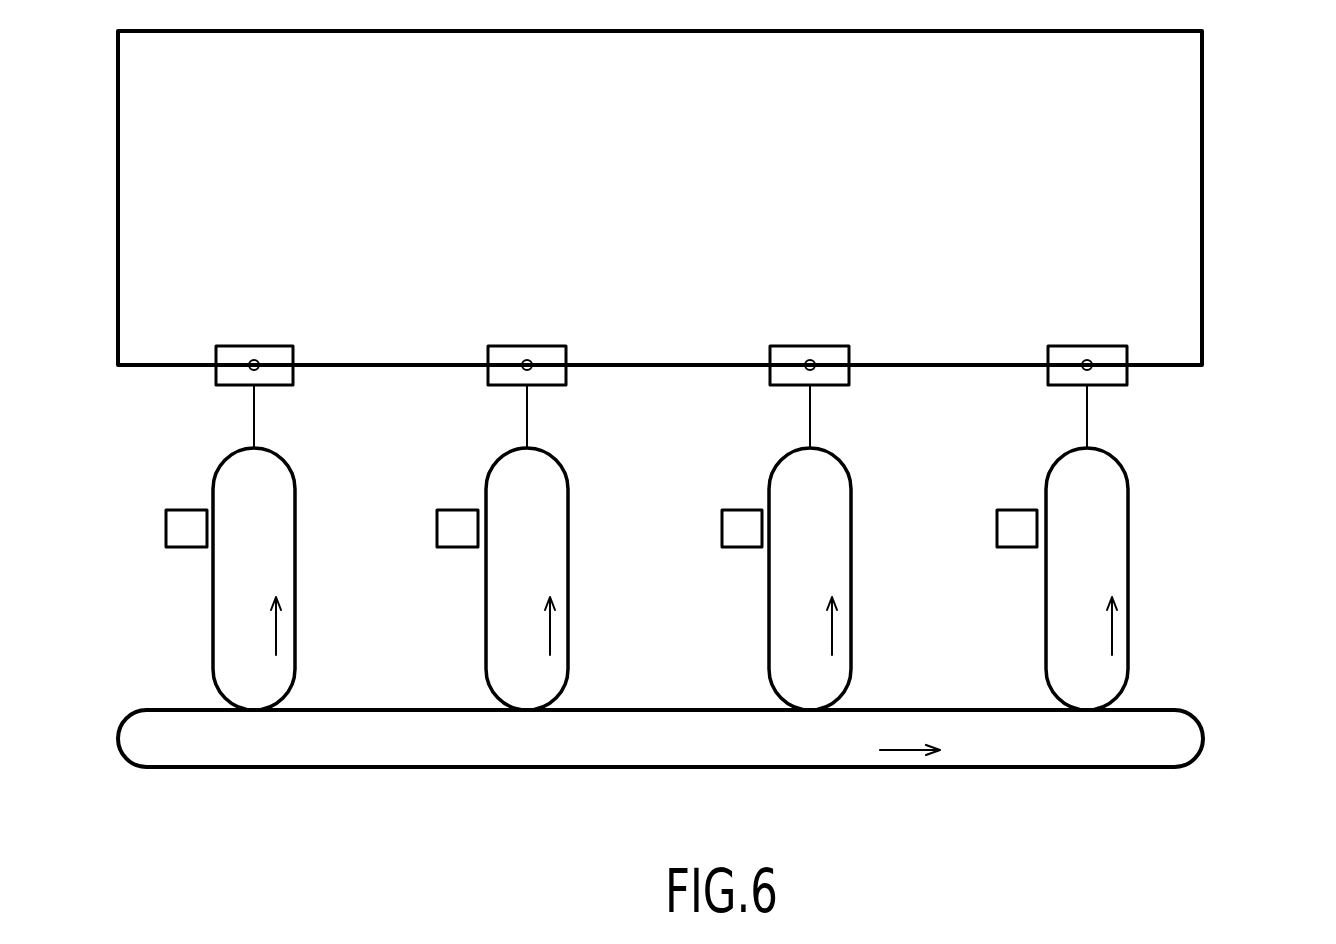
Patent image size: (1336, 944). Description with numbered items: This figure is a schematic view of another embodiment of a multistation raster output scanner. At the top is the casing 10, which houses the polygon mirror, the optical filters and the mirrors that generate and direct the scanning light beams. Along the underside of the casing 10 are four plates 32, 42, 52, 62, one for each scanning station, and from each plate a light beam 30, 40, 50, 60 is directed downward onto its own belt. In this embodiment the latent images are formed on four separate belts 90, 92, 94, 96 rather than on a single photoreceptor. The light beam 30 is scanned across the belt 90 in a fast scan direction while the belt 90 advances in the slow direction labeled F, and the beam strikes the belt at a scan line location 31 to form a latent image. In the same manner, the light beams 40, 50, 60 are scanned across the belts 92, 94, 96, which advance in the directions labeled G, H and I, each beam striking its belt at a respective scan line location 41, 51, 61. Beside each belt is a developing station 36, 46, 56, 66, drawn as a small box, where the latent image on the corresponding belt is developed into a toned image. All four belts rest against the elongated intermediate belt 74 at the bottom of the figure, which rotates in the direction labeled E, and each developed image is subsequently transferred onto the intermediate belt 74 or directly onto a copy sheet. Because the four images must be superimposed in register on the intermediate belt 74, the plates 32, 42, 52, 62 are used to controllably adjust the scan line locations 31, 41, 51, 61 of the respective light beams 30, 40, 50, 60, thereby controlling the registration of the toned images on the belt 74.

The casing 10 is at (1203, 200).
The intermediate belt 74 is at (1000, 768).
The light beam 30 is at (254, 418).
The scan line location 31 is at (258, 449).
The plate 32 is at (293, 385).
The developing station 36 is at (182, 508).
The belt 90 is at (295, 585).
The light beam 40 is at (527, 418).
The scan line location 41 is at (531, 449).
The plate 42 is at (566, 385).
The developing station 46 is at (456, 508).
The belt 92 is at (568, 585).
The light beam 50 is at (810, 418).
The scan line location 51 is at (814, 449).
The plate 52 is at (849, 385).
The developing station 56 is at (740, 508).
The belt 94 is at (851, 588).
The light beam 60 is at (1087, 418).
The scan line location 61 is at (1091, 449).
The plate 62 is at (1127, 385).
The developing station 66 is at (1017, 508).
The belt 96 is at (1128, 585).